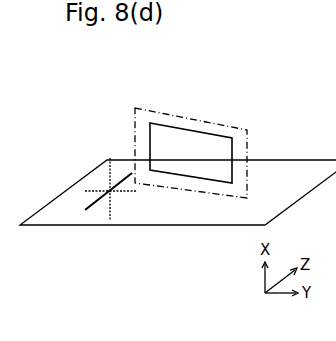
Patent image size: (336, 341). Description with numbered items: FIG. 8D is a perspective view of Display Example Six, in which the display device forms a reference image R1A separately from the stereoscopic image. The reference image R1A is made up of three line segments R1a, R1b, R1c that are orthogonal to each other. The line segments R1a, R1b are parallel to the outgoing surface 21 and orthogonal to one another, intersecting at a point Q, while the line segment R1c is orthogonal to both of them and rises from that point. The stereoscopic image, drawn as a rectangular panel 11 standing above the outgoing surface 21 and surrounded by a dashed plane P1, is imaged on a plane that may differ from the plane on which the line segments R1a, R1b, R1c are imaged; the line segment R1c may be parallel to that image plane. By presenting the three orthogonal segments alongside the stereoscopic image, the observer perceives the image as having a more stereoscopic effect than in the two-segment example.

The outgoing surface 21 is at (197, 215).
The projection plane P1 is at (235, 123).
The display image 11 is at (193, 140).
The point Q is at (110, 191).
The reference image R1A is at (104, 228).
The line segment R1a is at (92, 218).
The line segment R1b is at (125, 192).
The line segment R1c is at (110, 214).